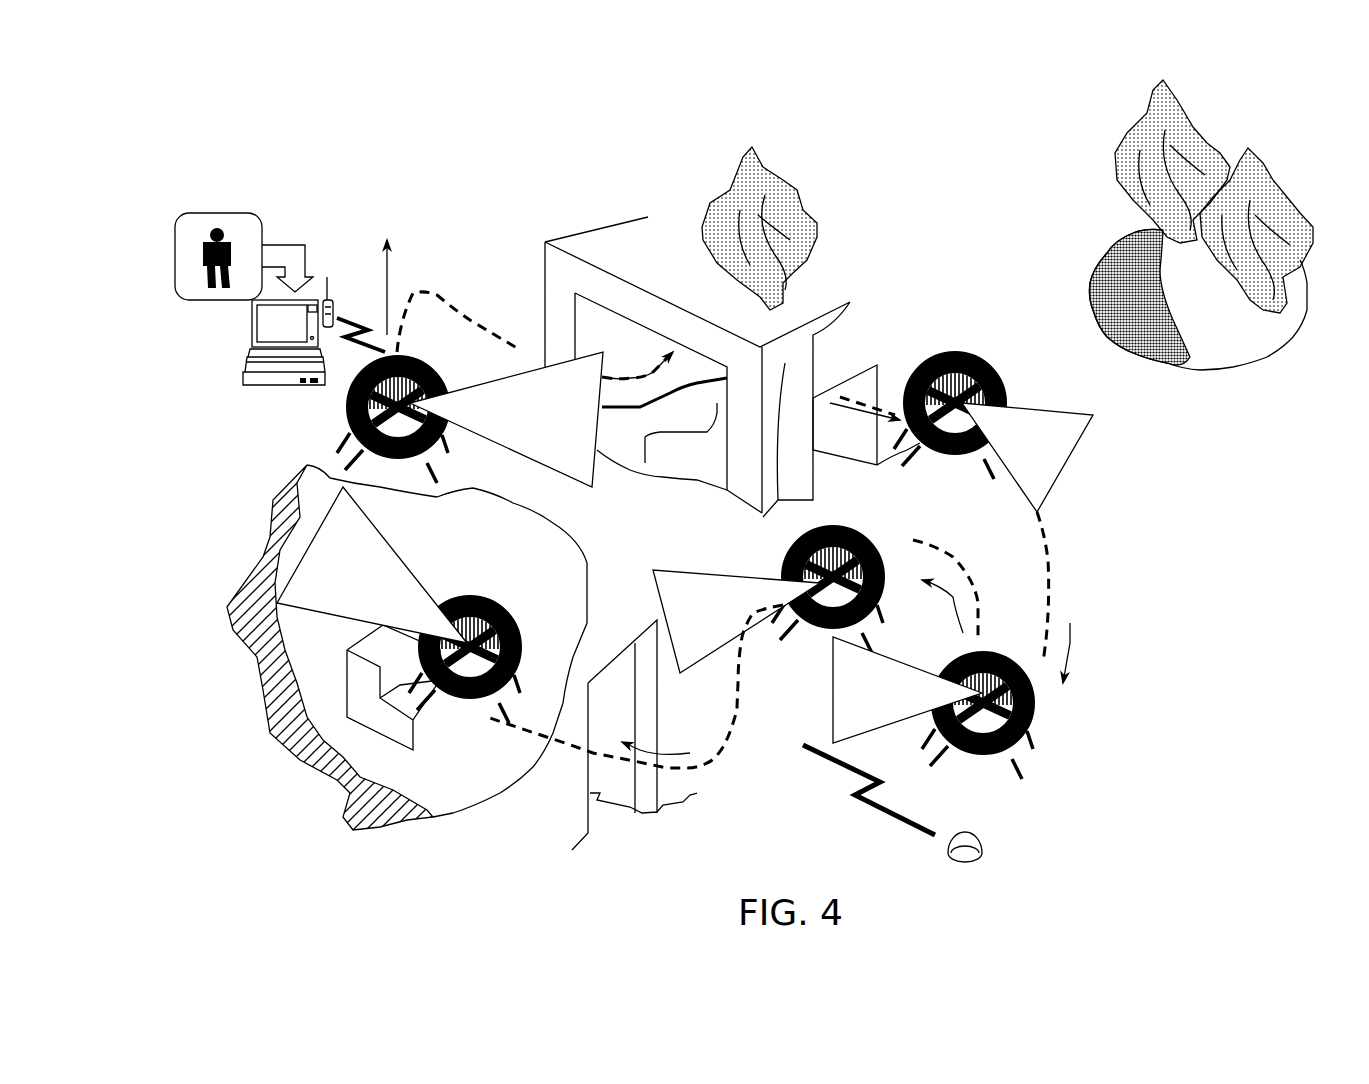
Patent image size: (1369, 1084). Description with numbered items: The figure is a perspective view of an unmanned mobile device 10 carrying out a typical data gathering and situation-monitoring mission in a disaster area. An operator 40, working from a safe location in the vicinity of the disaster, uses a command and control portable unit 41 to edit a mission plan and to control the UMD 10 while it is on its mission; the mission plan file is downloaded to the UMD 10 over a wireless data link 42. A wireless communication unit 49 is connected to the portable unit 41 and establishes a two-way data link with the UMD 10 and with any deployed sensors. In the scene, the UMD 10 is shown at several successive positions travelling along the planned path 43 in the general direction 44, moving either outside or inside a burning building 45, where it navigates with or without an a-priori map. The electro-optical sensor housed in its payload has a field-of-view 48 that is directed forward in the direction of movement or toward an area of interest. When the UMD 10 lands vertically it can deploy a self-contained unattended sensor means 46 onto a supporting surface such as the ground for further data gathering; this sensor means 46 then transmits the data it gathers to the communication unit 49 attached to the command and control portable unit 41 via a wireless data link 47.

The unmanned mobile device 10 is at (466, 383).
The operator 40 is at (240, 218).
The command and control portable unit 41 is at (297, 340).
The wireless data link 42 is at (360, 340).
The planned path 43 is at (455, 308).
The general direction 44 is at (387, 283).
The burning building 45 is at (822, 285).
The self-contained unattended sensor means 46 is at (962, 840).
The wireless data link 47 is at (867, 783).
The field-of-view 48 is at (570, 452).
The wireless communication unit 49 is at (327, 300).